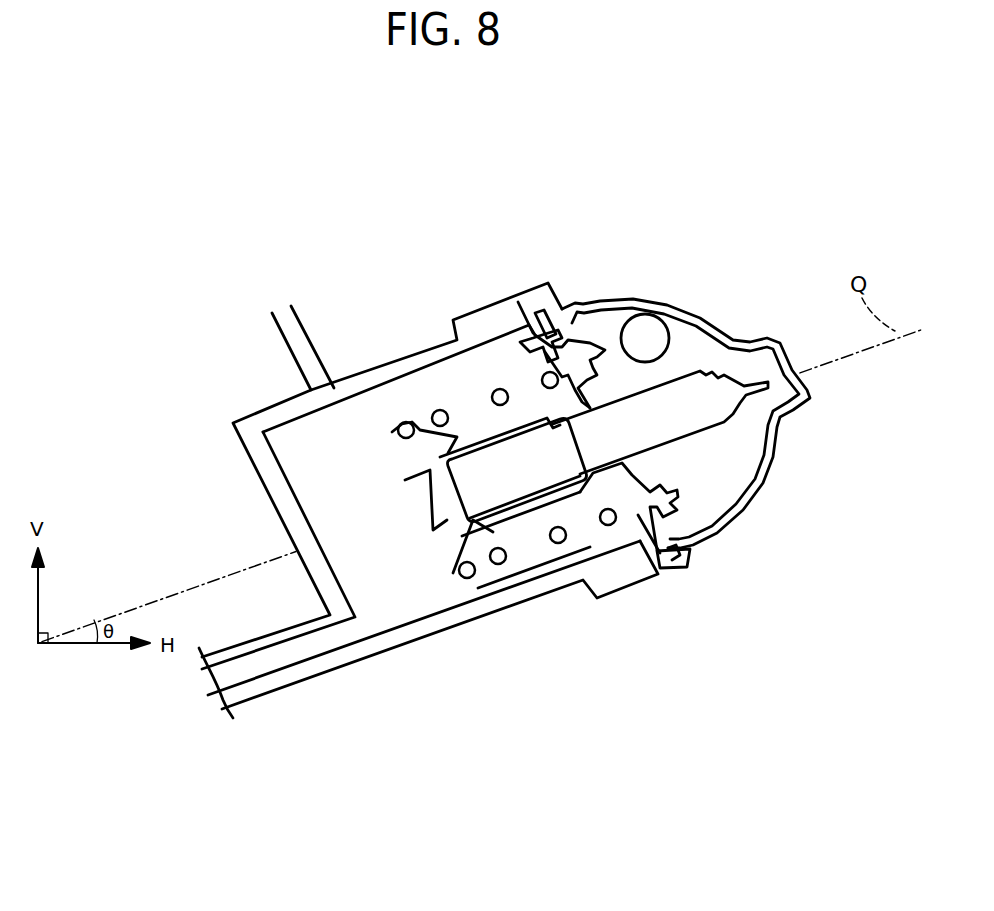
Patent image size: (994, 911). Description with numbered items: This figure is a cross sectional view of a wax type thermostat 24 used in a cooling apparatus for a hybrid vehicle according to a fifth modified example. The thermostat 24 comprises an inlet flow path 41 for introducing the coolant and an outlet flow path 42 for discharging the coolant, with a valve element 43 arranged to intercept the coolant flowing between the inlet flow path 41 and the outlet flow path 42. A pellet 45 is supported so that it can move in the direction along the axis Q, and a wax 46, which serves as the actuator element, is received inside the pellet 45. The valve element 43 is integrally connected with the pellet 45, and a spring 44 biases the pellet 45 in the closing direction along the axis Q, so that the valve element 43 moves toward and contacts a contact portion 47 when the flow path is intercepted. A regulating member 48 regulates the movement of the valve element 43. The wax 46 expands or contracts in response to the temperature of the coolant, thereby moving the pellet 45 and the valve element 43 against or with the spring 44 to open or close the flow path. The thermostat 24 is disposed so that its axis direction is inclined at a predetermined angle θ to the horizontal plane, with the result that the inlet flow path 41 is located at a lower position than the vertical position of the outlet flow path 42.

The thermostat 24 is at (723, 151).
The inlet flow path 41 is at (266, 662).
The outlet flow path 42 is at (655, 333).
The valve element 43 is at (672, 546).
The spring 44 is at (558, 545).
The pellet 45 is at (532, 512).
The wax 46 is at (467, 497).
The contact portion 47 is at (674, 568).
The regulating member 48 is at (574, 325).